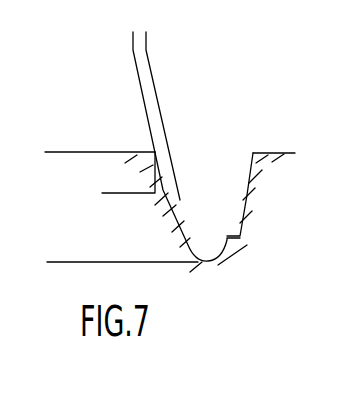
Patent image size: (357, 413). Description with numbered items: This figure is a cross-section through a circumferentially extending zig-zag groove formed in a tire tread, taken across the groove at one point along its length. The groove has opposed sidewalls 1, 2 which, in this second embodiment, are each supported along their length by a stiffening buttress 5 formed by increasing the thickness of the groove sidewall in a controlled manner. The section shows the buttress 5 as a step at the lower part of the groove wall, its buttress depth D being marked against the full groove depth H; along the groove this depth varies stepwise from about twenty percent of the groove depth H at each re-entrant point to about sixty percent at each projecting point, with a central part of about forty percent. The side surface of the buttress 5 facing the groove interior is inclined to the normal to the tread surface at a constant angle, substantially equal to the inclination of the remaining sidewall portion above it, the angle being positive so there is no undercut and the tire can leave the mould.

The groove sidewall 1 is at (253, 164).
The groove sidewall 2 is at (163, 180).
The stiffening buttress 5 is at (185, 215).
The groove depth H is at (53, 152).
The buttress depth D is at (110, 193).